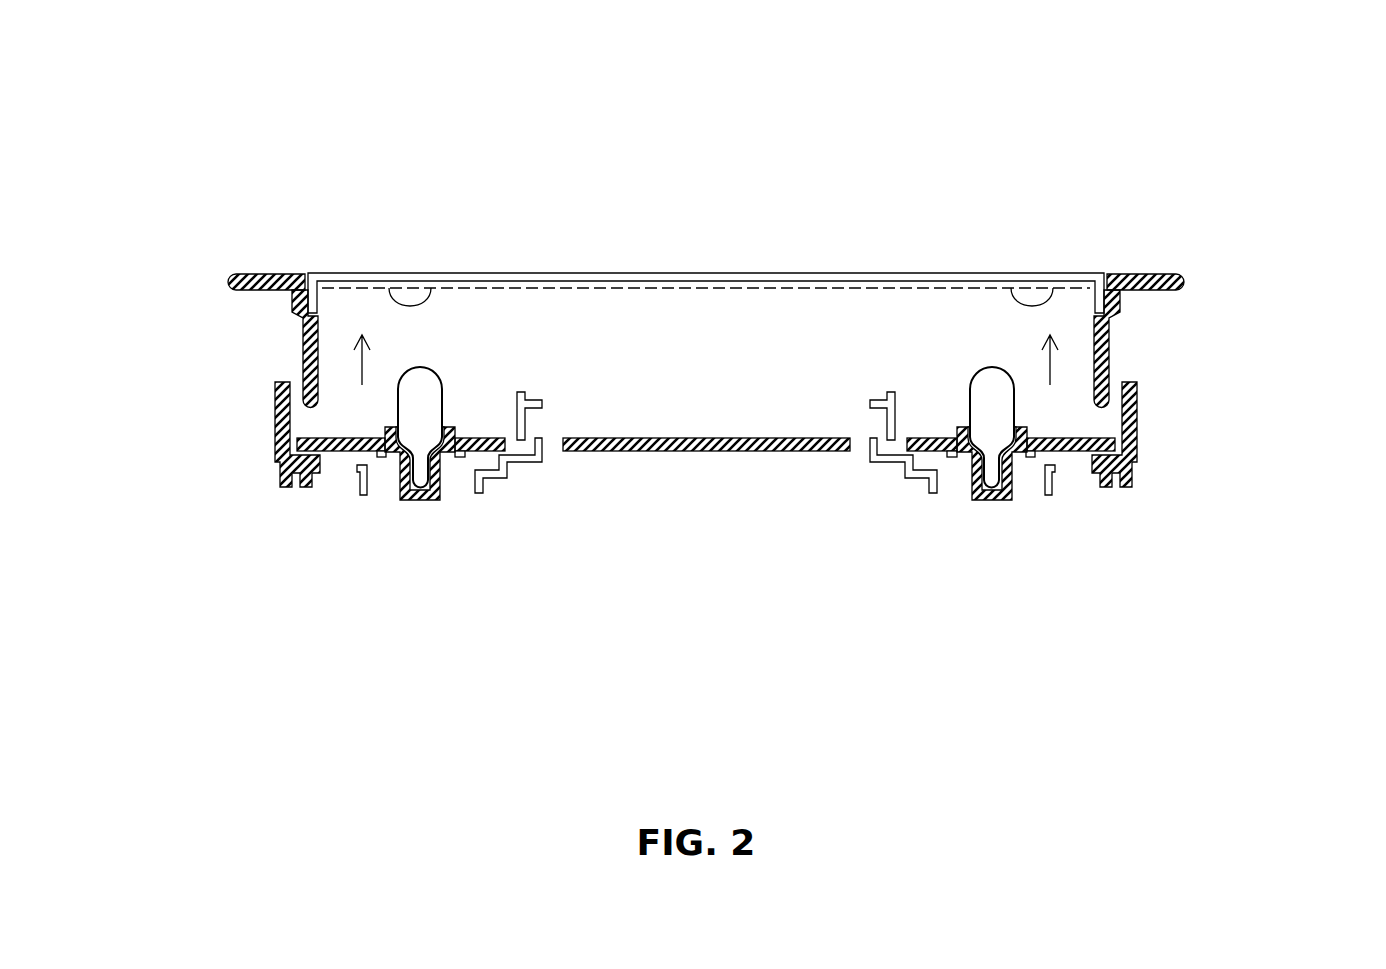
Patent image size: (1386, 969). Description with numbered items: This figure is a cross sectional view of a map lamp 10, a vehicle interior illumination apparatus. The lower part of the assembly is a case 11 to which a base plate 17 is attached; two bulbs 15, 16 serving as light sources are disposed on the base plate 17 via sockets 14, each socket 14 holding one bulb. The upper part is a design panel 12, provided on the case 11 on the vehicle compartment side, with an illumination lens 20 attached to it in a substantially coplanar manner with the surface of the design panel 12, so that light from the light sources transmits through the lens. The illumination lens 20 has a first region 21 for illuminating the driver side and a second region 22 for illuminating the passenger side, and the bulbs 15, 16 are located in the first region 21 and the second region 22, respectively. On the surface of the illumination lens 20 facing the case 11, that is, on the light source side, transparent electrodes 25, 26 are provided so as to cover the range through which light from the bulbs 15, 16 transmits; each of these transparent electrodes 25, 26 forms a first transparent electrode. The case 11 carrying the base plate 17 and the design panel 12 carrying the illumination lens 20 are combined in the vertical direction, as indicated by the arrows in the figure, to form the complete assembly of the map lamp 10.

The map lamp 10 is at (716, 394).
The case 11 is at (277, 433).
The design panel 12 is at (230, 278).
The socket 14 is at (407, 500).
The bulb 15 is at (975, 375).
The bulb 16 is at (442, 378).
The base plate 17 is at (705, 452).
The illumination lens 20 is at (997, 265).
The first region 21 is at (1087, 270).
The second region 22 is at (340, 276).
The transparent electrode 25 is at (1057, 287).
The transparent electrode 26 is at (382, 290).